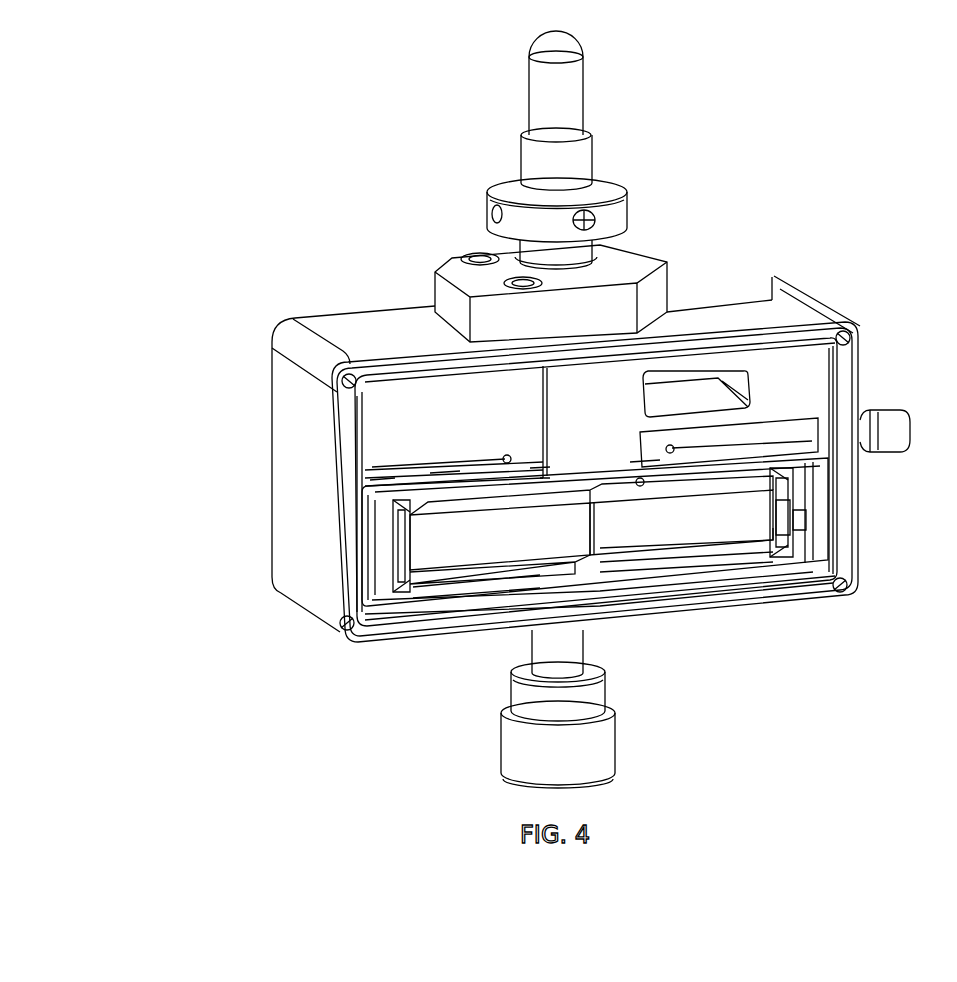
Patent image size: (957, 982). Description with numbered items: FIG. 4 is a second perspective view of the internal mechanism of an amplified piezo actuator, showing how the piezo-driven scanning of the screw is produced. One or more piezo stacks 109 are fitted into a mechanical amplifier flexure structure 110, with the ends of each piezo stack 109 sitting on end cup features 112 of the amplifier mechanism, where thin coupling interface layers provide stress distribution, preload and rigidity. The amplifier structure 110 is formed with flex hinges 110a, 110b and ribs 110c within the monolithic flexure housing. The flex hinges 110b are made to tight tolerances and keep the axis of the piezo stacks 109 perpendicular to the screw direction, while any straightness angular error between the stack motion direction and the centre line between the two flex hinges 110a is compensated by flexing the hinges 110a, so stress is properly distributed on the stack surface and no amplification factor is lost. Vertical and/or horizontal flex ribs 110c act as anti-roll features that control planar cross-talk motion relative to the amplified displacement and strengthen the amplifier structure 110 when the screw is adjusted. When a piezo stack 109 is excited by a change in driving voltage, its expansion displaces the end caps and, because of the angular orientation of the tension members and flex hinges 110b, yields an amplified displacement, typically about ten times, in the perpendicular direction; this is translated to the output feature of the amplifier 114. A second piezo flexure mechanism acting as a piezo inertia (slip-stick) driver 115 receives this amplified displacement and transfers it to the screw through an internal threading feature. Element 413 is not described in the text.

The piezo stack 109 is at (657, 520).
The mechanical amplifier flexure structure 110 is at (547, 519).
The flex hinge 110a is at (800, 512).
The flex hinge 110b is at (403, 583).
The flex rib 110c is at (358, 477).
The end cup feature 112 is at (793, 518).
The output feature of the amplifier 114 is at (580, 425).
The piezo inertia driver 115 is at (706, 398).
The end contact member 413 is at (790, 522).